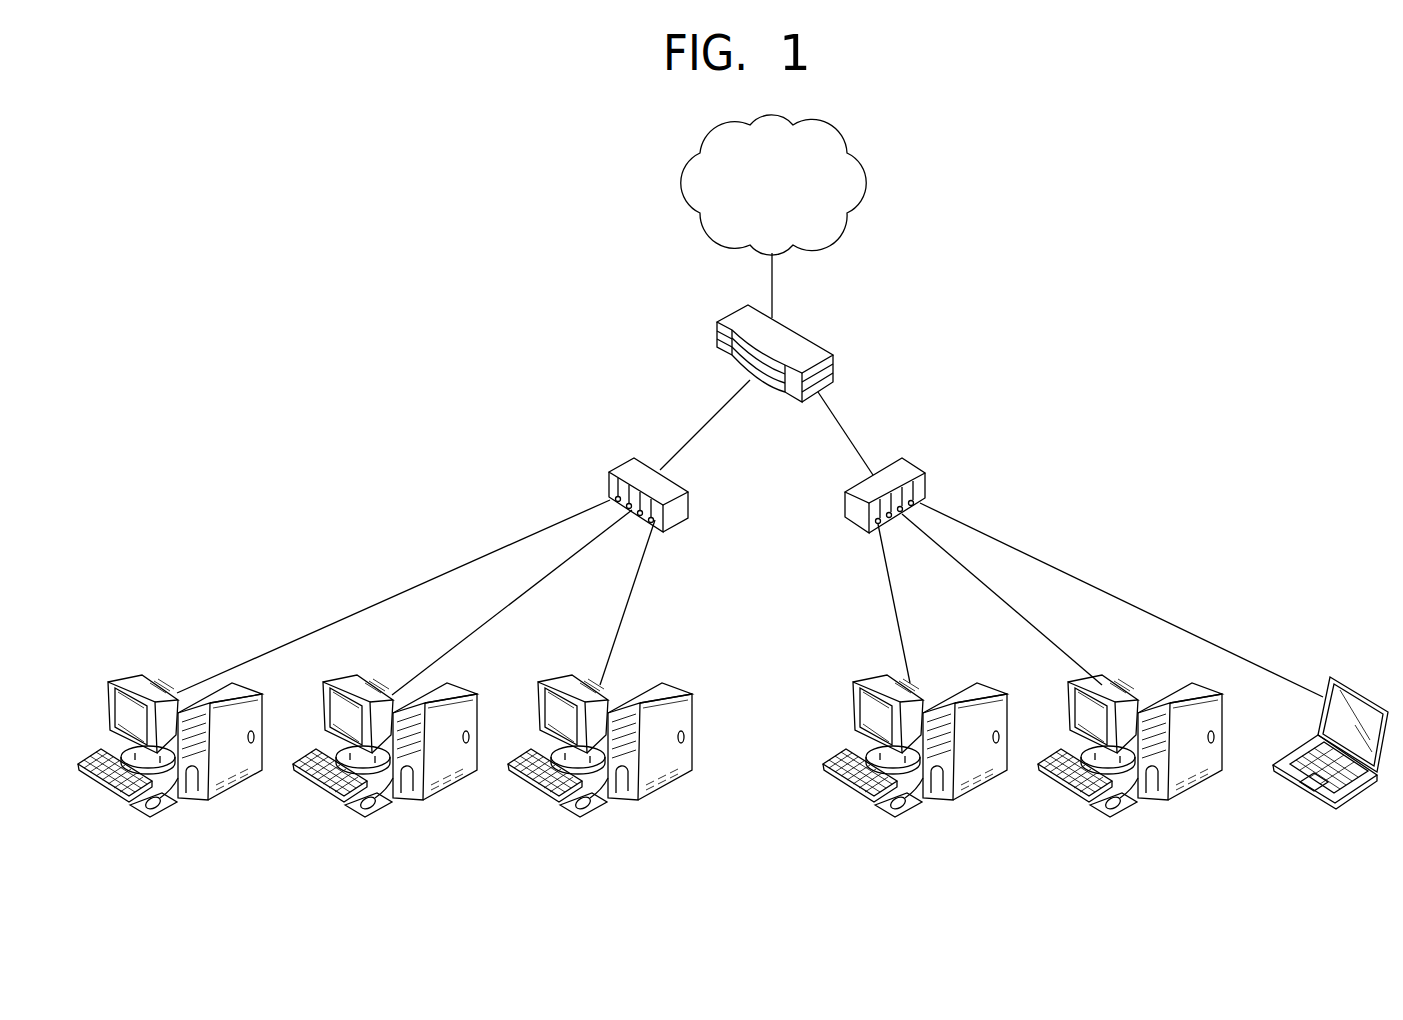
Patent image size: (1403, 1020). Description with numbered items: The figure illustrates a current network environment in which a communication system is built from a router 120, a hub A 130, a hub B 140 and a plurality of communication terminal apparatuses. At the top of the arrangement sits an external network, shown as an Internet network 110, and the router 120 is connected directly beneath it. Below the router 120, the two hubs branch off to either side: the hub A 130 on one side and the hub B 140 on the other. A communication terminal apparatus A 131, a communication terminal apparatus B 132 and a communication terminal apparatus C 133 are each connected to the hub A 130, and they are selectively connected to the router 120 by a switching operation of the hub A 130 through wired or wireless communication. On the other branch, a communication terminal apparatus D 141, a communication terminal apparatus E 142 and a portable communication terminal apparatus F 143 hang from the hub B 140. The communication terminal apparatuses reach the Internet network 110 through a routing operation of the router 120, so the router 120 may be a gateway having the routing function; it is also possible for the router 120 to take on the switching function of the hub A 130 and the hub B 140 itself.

The Internet network 110 is at (868, 185).
The router 120 is at (828, 332).
The hub A 130 is at (611, 450).
The hub B 140 is at (921, 446).
The communication terminal apparatus A 131 is at (175, 830).
The communication terminal apparatus B 132 is at (390, 830).
The communication terminal apparatus C 133 is at (605, 830).
The communication terminal apparatus D 141 is at (922, 830).
The communication terminal apparatus E 142 is at (1137, 830).
The portable communication terminal apparatus F 143 is at (1351, 830).